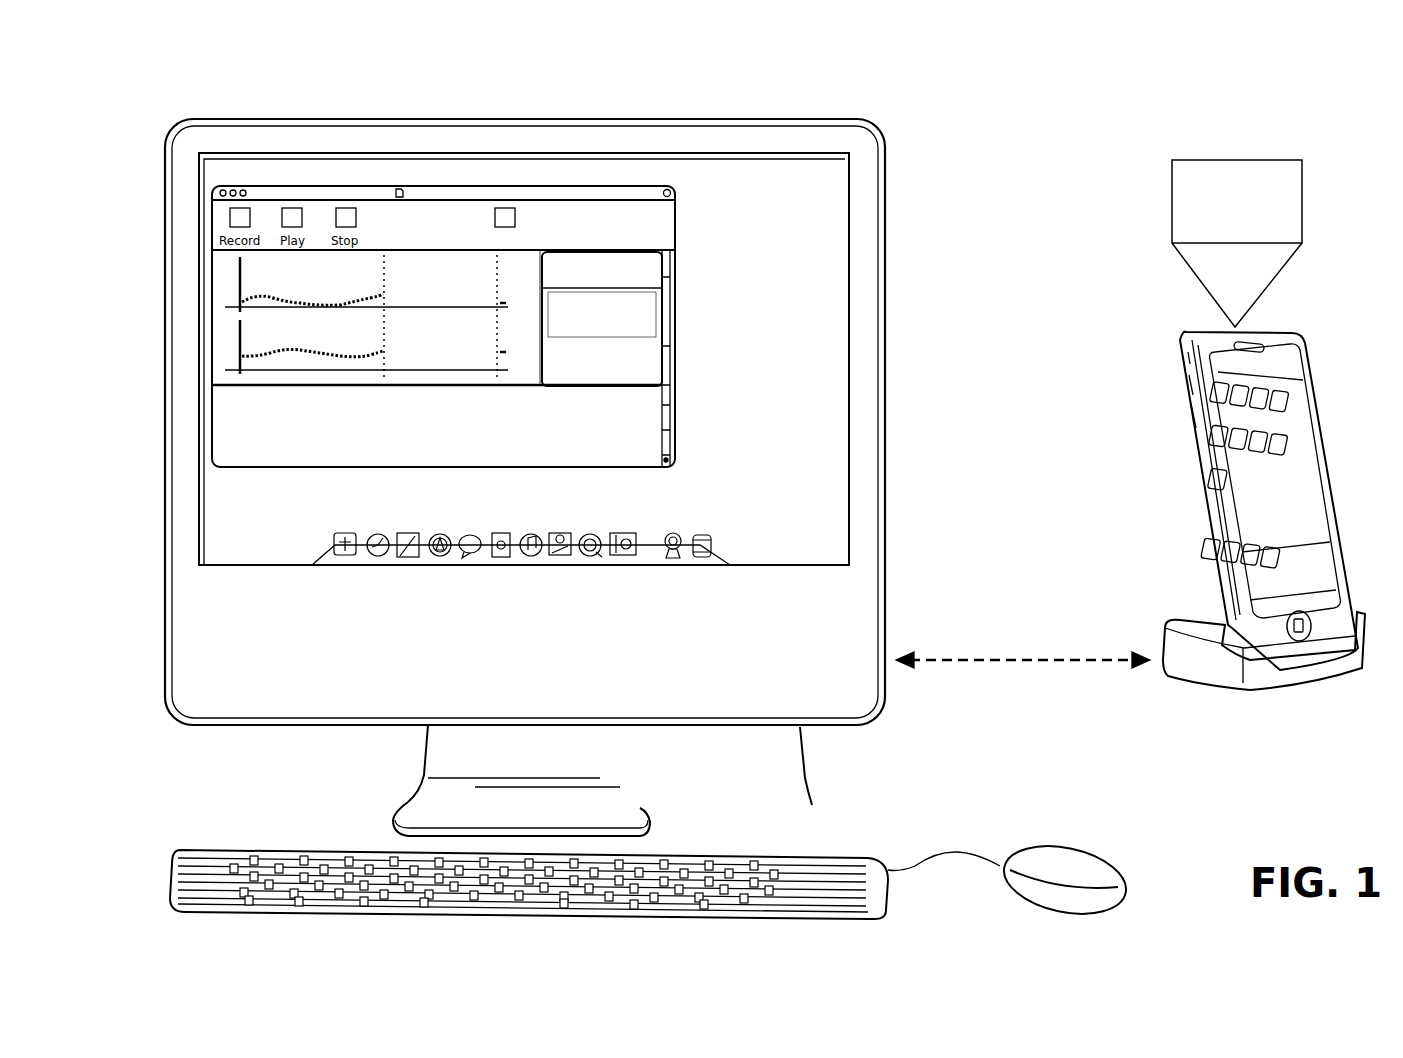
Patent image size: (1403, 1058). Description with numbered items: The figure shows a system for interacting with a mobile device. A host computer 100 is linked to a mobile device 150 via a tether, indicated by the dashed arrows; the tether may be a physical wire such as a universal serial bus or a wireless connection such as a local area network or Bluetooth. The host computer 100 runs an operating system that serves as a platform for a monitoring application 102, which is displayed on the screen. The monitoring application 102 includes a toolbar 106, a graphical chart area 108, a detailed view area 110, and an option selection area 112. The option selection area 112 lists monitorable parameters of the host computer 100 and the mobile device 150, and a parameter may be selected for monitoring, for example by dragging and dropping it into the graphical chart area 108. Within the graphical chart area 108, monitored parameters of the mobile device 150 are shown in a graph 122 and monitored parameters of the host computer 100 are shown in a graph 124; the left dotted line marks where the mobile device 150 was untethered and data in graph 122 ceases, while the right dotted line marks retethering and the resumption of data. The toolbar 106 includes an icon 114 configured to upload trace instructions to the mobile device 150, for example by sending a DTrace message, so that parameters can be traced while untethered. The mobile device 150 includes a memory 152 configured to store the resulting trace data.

The host computer 100 is at (953, 234).
The monitoring application 102 is at (677, 330).
The toolbar 106 is at (265, 196).
The graphical chart area 108 is at (315, 268).
The detailed view area 110 is at (518, 410).
The option selection area 112 is at (643, 300).
The icon 114 is at (503, 212).
The graph 122 is at (236, 276).
The graph 124 is at (236, 332).
The mobile device 150 is at (1352, 348).
The memory 152 is at (1253, 214).